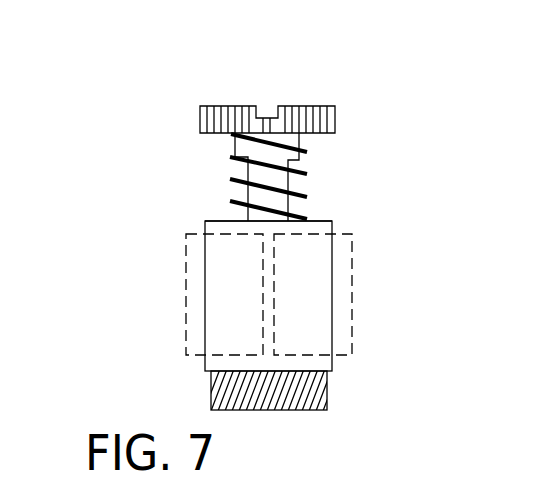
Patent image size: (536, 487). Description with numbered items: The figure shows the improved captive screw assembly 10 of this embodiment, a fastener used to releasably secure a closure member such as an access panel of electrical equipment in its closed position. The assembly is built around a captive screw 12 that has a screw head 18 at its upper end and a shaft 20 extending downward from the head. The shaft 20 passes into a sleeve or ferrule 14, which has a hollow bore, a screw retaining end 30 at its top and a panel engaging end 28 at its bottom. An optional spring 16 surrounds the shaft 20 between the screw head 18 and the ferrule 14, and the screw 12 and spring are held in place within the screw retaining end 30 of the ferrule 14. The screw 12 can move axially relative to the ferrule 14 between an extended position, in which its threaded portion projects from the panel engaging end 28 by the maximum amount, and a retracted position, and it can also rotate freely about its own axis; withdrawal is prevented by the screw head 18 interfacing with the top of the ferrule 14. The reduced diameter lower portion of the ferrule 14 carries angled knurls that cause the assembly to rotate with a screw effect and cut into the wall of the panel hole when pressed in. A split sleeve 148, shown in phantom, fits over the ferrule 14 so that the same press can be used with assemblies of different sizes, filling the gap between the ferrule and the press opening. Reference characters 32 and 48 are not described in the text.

The captive screw assembly 10 is at (188, 160).
The captive screw 12 is at (278, 182).
The ferrule 14 is at (205, 313).
The spring 16 is at (314, 278).
The screw head 18 is at (320, 84).
The shaft 20 is at (236, 214).
The panel engaging end 28 is at (300, 410).
The screw retaining end 30 is at (332, 221).
The knurled surface 32 is at (335, 118).
The shoulder 48 is at (322, 404).
The split sleeve 148 is at (350, 337).